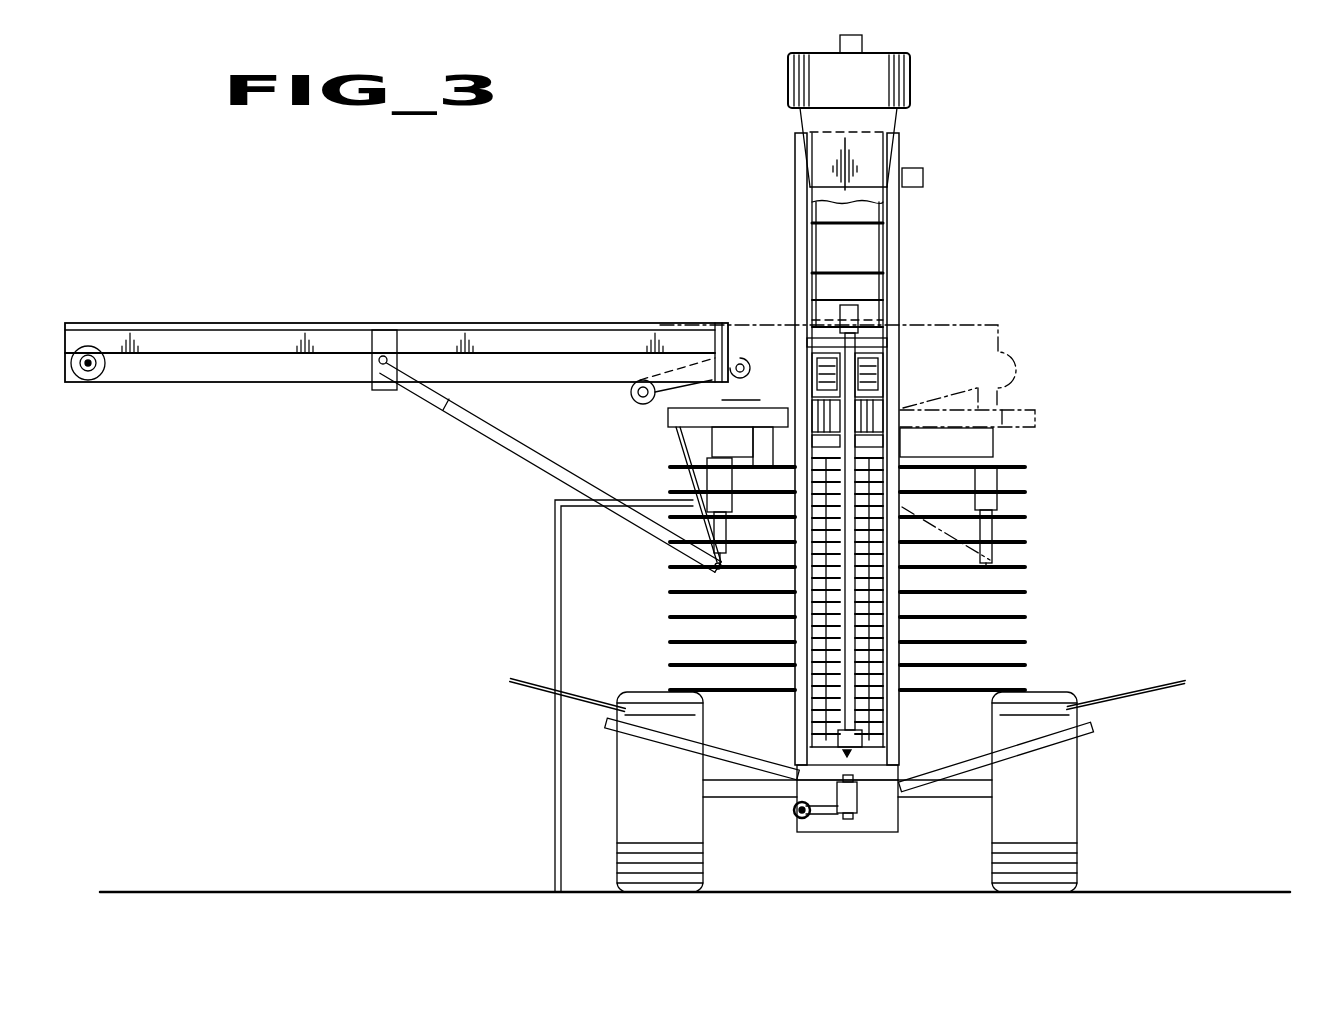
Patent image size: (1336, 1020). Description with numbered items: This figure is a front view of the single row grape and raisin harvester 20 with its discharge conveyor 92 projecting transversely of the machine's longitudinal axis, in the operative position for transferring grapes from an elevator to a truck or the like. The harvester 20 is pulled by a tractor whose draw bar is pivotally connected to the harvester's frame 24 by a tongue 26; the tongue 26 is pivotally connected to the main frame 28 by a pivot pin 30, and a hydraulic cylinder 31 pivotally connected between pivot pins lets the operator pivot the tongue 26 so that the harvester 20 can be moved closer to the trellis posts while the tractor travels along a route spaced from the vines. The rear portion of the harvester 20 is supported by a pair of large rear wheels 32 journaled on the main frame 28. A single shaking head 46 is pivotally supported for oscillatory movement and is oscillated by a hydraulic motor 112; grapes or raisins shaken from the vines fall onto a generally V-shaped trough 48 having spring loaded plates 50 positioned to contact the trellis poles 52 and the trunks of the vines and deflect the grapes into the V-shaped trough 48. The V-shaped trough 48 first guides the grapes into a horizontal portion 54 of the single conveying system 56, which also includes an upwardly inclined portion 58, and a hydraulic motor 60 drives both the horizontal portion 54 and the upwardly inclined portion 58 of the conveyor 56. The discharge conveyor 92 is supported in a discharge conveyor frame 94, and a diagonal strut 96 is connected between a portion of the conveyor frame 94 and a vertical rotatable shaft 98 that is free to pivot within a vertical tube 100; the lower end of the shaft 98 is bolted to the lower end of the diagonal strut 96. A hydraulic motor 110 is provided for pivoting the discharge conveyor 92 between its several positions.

The single row grape and raisin harvester 20 is at (1068, 142).
The harvester's frame 24 is at (906, 255).
The tongue 26 is at (860, 796).
The main frame 28 is at (906, 291).
The pivot pin 30 is at (847, 821).
The hydraulic cylinder 31 is at (795, 811).
The rear wheels 32 is at (625, 772).
The single shaking head 46 is at (1034, 462).
The V-shaped trough 48 is at (1033, 714).
The spring loaded plates 50 is at (535, 688).
The trellis poles 52 is at (558, 540).
The horizontal portion 54 is at (875, 758).
The single conveying system 56 is at (872, 245).
The upwardly inclined portion 58 is at (828, 257).
The hydraulic motor 60 is at (926, 180).
The discharge conveyor 92 is at (274, 316).
The discharge conveyor frame 94 is at (528, 342).
The diagonal strut 96 is at (497, 435).
The vertical rotatable shaft 98 is at (700, 526).
The vertical tube 100 is at (712, 480).
The hydraulic motor 110 is at (755, 420).
The hydraulic motor 112 is at (826, 306).